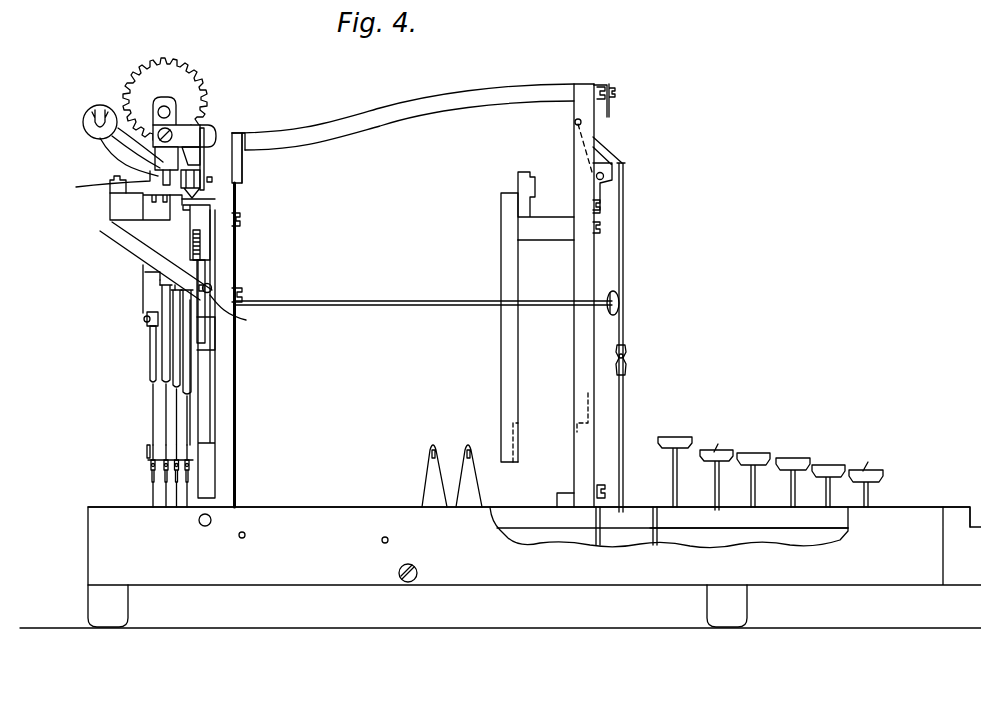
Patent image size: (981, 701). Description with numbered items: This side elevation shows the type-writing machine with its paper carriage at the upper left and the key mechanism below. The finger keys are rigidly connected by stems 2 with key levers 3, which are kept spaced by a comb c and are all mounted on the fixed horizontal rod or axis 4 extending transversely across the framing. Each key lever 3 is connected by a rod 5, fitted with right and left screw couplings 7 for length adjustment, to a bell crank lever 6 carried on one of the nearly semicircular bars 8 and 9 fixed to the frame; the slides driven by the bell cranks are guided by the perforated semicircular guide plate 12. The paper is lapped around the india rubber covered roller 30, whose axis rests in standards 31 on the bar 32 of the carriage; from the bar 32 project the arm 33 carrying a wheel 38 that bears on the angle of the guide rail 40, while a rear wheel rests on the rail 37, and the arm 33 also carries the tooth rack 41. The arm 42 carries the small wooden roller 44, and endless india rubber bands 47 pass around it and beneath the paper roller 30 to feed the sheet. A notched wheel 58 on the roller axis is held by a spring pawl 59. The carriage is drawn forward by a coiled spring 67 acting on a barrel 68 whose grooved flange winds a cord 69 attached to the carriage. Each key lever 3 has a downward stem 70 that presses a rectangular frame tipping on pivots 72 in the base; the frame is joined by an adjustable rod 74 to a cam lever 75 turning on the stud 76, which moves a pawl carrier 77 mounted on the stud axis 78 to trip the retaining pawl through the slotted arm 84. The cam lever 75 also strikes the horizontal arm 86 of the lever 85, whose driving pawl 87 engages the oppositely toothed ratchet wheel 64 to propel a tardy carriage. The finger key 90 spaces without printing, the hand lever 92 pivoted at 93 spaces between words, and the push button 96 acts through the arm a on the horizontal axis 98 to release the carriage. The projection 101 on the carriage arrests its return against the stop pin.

The stems 2 is at (681, 482).
The key levers 3 is at (749, 524).
The horizontal rod or axis 4 is at (203, 526).
The rod 5 is at (619, 252).
The bell crank lever 6 is at (596, 156).
The right and left screw couplings 7 is at (627, 367).
The semicircular bar 8 is at (593, 408).
The semicircular bar 9 is at (509, 327).
The semicircular guide plate 12 is at (607, 108).
The india rubber covered roller 30 is at (183, 74).
The standards 31 is at (166, 166).
The bar 32 is at (103, 184).
The arm 33 is at (192, 156).
The bar or rail 37 is at (115, 198).
The wheel 38 is at (200, 185).
The bar or guide rail 40 is at (215, 199).
The tooth rack 41 is at (205, 222).
The arm 42 is at (120, 158).
The small wooden roller 44 is at (96, 108).
The endless india rubber bands 47 is at (200, 153).
The notched wheel 58 is at (164, 104).
The spring pawl 59 is at (243, 154).
The ratchet wheel 64 is at (198, 233).
The coiled spring 67 is at (135, 240).
The barrel 68 is at (146, 303).
The cord 69 is at (165, 205).
The stem 70 is at (658, 537).
The pivots 72 is at (418, 573).
The adjustable rod 74 is at (188, 500).
The cam lever 75 is at (178, 355).
The stationary axis or stud 76 is at (149, 330).
The pawl carrier 77 is at (190, 420).
The stud axis 78 is at (147, 452).
The slotted arm 84 is at (207, 260).
The lever 85 is at (212, 324).
The horizontal arm 86 is at (147, 316).
The driving pawl 87 is at (207, 270).
The finger key 90 is at (793, 477).
The hand lever 92 is at (956, 518).
The pivot 93 is at (388, 540).
The push button 96 is at (623, 302).
The horizontal axis 98 is at (212, 284).
The projection 101 is at (216, 203).
The arm a is at (234, 312).
The comb c is at (595, 537).